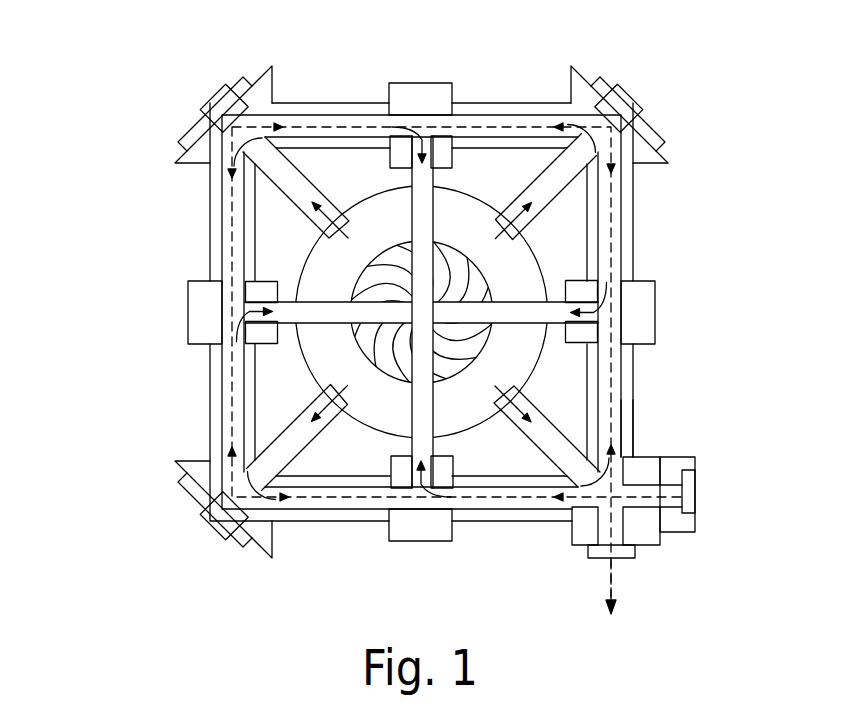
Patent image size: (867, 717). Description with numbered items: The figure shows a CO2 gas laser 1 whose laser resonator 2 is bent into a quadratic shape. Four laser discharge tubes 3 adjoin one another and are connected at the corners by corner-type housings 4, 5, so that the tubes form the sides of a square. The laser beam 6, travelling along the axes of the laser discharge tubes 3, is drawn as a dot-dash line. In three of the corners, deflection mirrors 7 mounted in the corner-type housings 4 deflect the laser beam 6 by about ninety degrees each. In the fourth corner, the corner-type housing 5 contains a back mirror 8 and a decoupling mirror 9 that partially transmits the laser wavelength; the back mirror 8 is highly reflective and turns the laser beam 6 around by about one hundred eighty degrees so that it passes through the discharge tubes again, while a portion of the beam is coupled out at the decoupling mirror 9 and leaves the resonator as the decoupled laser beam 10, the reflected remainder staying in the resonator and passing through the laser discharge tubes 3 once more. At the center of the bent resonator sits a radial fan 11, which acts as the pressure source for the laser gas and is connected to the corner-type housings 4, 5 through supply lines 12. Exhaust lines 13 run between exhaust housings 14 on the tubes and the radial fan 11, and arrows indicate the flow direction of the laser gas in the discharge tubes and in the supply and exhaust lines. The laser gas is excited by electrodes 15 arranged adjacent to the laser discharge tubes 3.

The CO2 gas laser 1 is at (136, 101).
The laser resonator 2 is at (134, 259).
The laser discharge tubes 3 is at (378, 110).
The corner-type housings 4 is at (175, 164).
The corner-type housing 5 is at (662, 542).
The laser beam 6 is at (616, 431).
The deflection mirrors 7 is at (222, 122).
The back mirror 8 is at (688, 494).
The decoupling mirror 9 is at (630, 553).
The decoupled laser beam 10 is at (607, 584).
The radial fan 11 is at (455, 272).
The supply lines 12 is at (292, 167).
The exhaust lines 13 is at (440, 177).
The exhaust housings 14 is at (423, 83).
The electrodes 15 is at (312, 150).